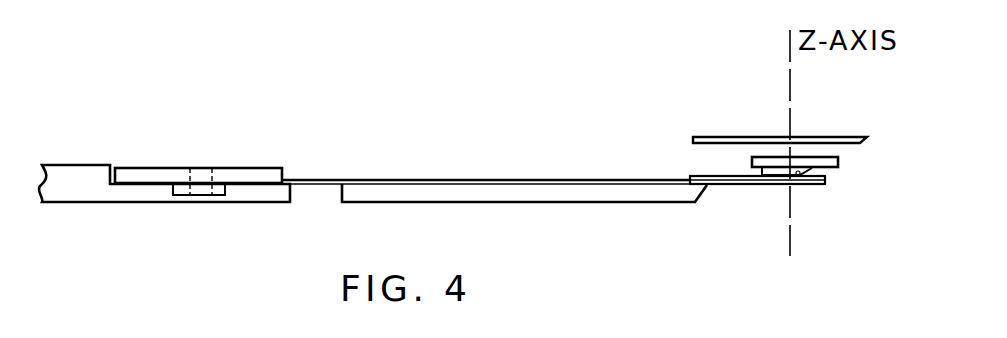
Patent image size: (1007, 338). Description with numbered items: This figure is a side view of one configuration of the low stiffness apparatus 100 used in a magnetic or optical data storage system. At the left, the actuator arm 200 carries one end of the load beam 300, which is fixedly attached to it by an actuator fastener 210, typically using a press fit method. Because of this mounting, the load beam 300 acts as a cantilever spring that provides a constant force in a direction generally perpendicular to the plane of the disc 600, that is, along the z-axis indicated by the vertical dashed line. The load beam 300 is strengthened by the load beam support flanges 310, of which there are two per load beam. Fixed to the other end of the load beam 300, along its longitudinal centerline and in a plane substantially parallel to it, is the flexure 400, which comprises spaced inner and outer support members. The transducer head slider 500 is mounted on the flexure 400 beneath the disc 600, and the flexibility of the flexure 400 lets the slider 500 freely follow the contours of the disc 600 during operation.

The low stiffness apparatus 100 is at (479, 136).
The actuator arm 200 is at (88, 165).
The actuator fastener 210 is at (227, 168).
The load beam 300 is at (315, 186).
The load beam support flanges 310 is at (467, 190).
The flexure 400 is at (704, 175).
The transducer head slider 500 is at (838, 170).
The disc 600 is at (742, 136).